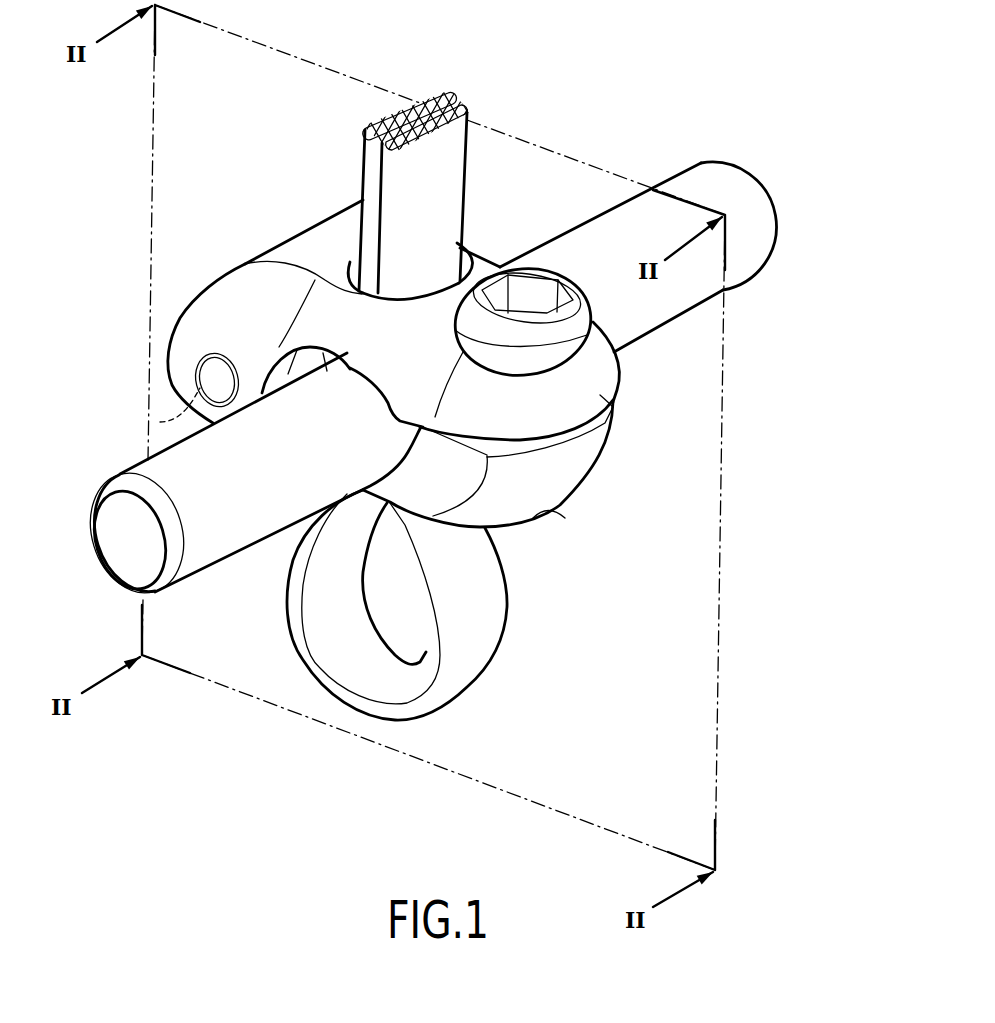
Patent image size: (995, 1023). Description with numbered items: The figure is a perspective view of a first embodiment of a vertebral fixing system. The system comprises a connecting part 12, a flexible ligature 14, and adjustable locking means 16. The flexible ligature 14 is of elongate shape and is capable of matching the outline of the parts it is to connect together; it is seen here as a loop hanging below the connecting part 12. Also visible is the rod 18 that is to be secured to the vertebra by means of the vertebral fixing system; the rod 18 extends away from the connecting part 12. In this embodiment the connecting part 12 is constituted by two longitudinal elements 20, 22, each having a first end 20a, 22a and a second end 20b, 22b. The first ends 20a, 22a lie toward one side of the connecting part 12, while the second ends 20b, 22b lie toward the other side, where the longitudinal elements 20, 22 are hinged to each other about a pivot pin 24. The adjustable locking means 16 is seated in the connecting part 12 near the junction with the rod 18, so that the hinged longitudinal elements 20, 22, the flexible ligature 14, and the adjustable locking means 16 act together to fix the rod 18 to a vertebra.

The connecting part 12 is at (687, 463).
The flexible ligature 14 is at (483, 663).
The adjustable locking means 16 is at (483, 268).
The rod 18 is at (707, 178).
The longitudinal element 20 is at (612, 471).
The first end 20a is at (563, 475).
The second end 20b is at (160, 422).
The longitudinal element 22 is at (637, 362).
The first end 22a is at (600, 395).
The second end 22b is at (212, 311).
The pivot pin 24 is at (207, 377).